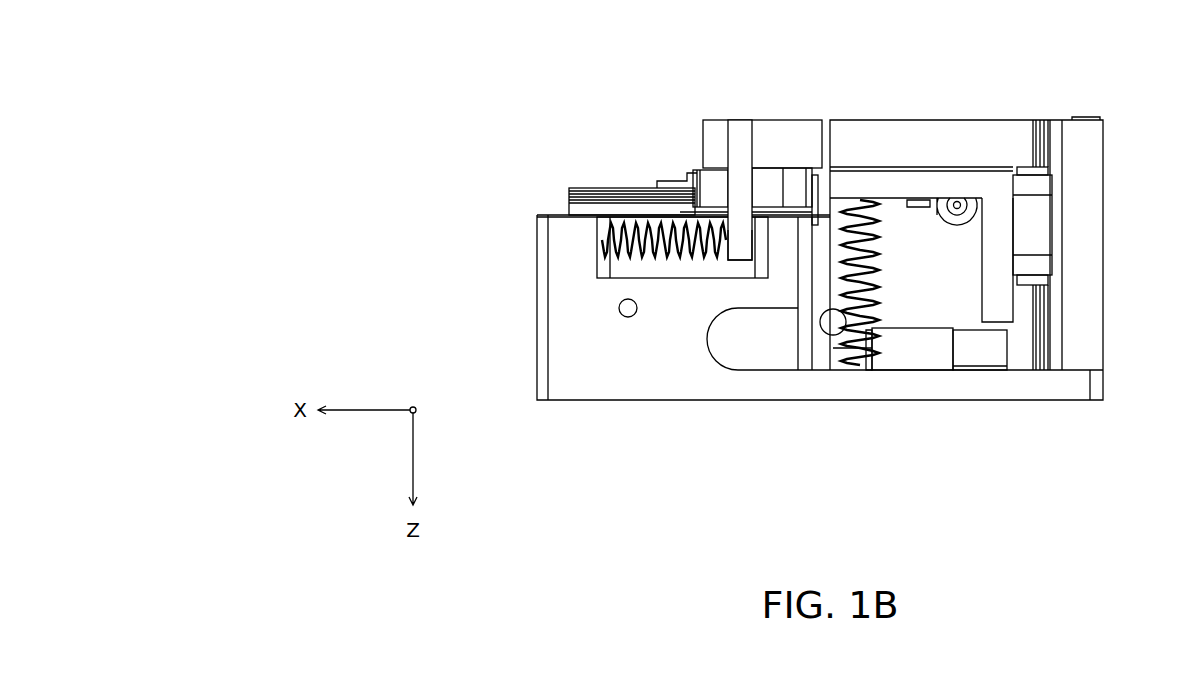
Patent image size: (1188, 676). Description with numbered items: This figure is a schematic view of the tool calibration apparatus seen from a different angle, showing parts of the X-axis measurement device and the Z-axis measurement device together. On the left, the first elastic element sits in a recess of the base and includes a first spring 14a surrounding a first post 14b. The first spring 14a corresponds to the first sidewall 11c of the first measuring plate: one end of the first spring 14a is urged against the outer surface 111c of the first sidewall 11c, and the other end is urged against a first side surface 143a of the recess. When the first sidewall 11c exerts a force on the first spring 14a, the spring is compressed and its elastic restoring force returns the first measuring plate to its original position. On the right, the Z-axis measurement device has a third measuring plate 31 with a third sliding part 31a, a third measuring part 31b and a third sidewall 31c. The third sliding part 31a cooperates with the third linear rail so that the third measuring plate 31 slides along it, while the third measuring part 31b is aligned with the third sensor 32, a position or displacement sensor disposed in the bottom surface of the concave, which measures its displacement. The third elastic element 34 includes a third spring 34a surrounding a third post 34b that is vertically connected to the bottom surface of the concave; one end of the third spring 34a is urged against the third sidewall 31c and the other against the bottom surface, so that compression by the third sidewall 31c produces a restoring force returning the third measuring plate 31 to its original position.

The first sidewall 11c is at (745, 185).
The outer surface of the first sidewall 111c is at (730, 242).
The first spring 14a is at (657, 252).
The first post 14b is at (635, 242).
The first side surface of the recess 143a is at (593, 263).
The third measuring plate 31 is at (979, 174).
The third sliding part 31a is at (1035, 223).
The third measuring part 31b is at (1002, 295).
The third sidewall 31c is at (856, 185).
The third sensor 32 is at (970, 358).
The third elastic element 34 is at (883, 233).
The third spring 34a is at (875, 287).
The third post 34b is at (855, 315).